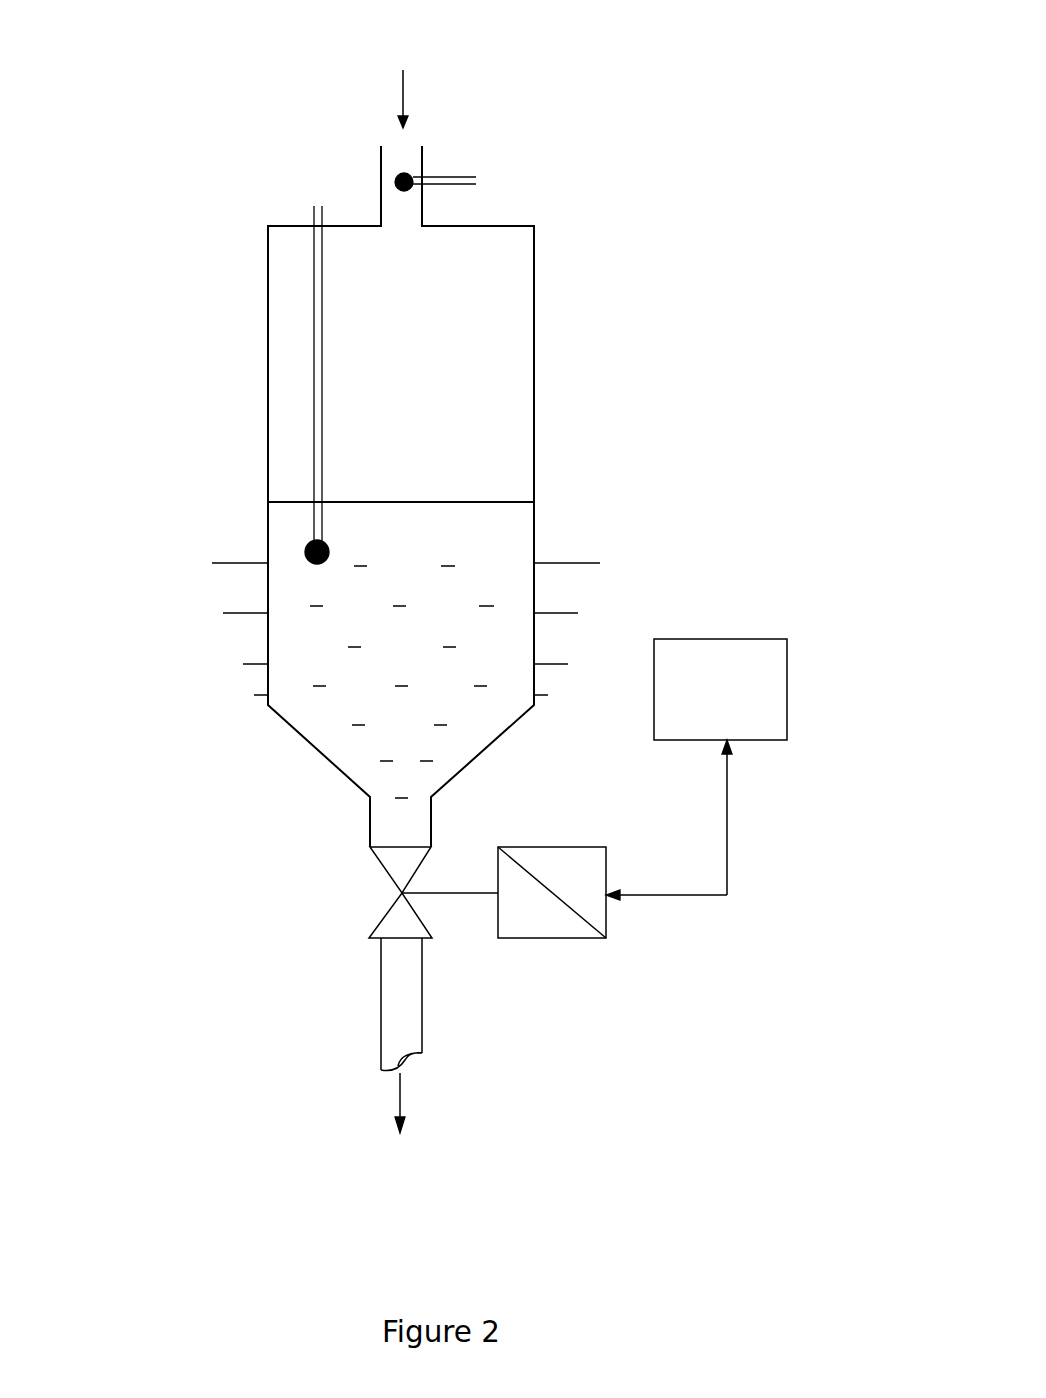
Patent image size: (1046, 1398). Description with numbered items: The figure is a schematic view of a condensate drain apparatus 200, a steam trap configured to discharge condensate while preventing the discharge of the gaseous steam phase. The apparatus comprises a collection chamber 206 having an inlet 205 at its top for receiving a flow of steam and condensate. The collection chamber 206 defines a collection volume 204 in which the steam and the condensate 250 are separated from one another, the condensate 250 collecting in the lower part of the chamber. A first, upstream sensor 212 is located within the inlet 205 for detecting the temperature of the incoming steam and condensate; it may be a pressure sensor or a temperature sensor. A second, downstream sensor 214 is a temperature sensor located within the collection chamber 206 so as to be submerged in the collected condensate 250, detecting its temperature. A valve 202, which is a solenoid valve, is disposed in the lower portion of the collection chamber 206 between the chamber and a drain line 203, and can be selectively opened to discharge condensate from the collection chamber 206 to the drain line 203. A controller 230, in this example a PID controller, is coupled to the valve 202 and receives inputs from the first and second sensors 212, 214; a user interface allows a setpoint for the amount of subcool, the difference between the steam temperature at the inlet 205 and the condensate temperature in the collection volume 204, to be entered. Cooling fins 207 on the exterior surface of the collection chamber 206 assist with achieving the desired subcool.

The condensate drain apparatus 200 is at (752, 36).
The valve 202 is at (393, 868).
The drain line 203 is at (390, 1013).
The collection volume 204 is at (448, 380).
The inlet 205 is at (383, 178).
The collection chamber 206 is at (535, 469).
The cooling fins 207 is at (600, 561).
The first sensor 212 is at (412, 172).
The second sensor 214 is at (307, 543).
The controller 230 is at (787, 703).
The condensate 250 is at (292, 637).